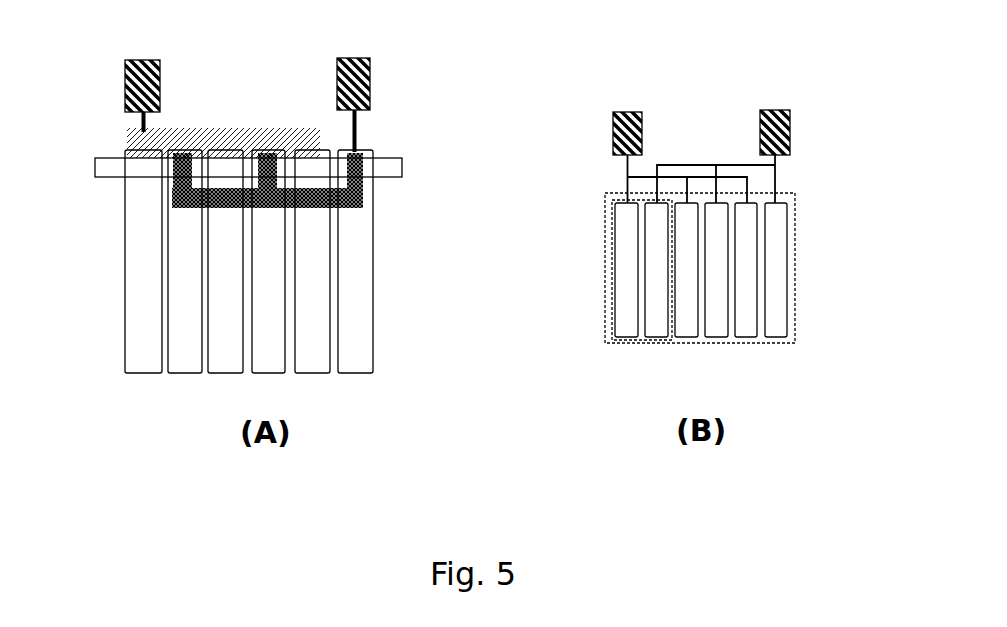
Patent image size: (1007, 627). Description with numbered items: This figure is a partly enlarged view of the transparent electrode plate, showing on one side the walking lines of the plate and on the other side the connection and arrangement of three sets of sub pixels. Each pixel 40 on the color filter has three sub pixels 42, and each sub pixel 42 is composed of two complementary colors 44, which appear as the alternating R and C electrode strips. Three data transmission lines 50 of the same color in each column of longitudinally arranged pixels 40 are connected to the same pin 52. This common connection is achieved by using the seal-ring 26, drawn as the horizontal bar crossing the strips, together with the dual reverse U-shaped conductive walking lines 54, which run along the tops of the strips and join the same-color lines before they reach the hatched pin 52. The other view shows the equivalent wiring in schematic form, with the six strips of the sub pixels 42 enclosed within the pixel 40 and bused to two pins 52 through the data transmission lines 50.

The seal-ring 26 is at (113, 168).
The pixel 40 is at (607, 242).
The sub pixel 42 is at (612, 302).
The complementary colors 44 is at (190, 357).
The data transmission line 50 is at (357, 133).
The pin 52 is at (370, 78).
The dual reverse U-shaped conductive walking lines 54 is at (133, 145).